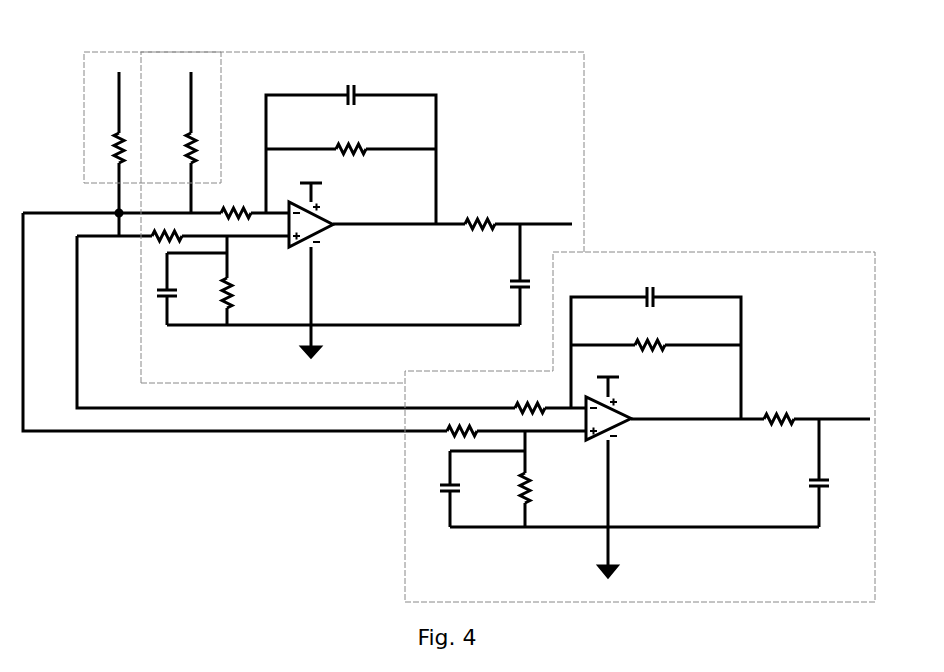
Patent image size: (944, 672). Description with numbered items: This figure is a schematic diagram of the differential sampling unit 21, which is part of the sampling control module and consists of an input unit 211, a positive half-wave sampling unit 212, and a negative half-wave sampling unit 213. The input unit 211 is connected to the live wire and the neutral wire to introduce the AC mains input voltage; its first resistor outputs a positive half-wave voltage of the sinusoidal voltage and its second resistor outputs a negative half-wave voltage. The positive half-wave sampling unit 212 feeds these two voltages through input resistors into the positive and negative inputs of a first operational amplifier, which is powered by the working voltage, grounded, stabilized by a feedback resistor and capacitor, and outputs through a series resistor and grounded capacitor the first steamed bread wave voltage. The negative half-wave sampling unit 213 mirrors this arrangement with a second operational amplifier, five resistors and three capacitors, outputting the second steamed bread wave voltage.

The differential sampling unit 21 is at (270, 42).
The input unit 211 is at (148, 57).
The positive half-wave sampling unit 212 is at (415, 54).
The negative half-wave sampling unit 213 is at (716, 260).